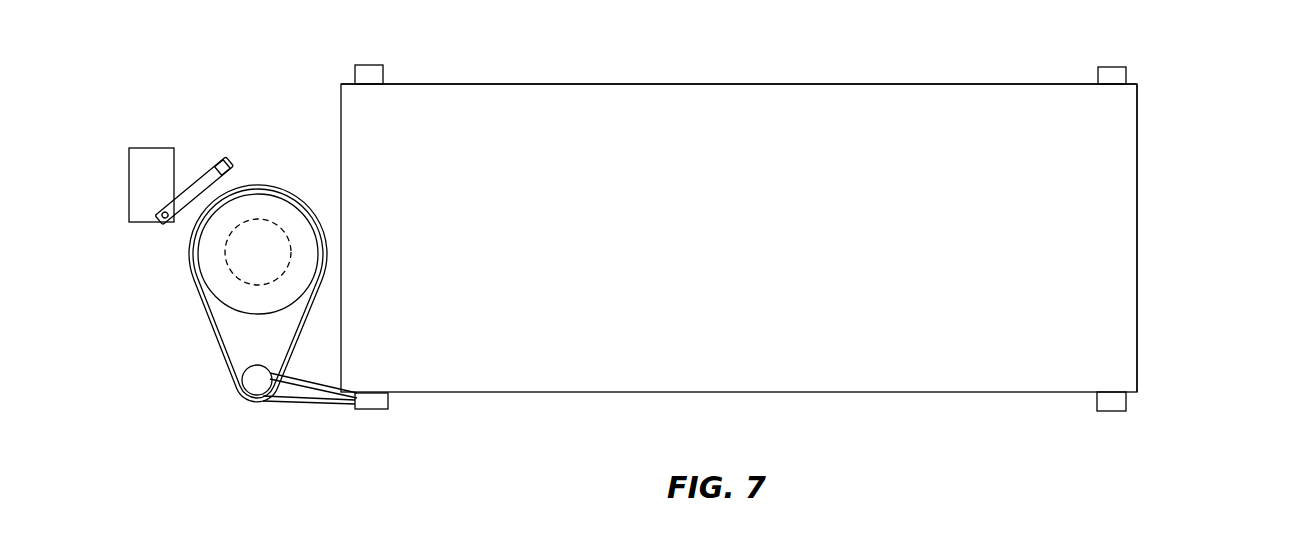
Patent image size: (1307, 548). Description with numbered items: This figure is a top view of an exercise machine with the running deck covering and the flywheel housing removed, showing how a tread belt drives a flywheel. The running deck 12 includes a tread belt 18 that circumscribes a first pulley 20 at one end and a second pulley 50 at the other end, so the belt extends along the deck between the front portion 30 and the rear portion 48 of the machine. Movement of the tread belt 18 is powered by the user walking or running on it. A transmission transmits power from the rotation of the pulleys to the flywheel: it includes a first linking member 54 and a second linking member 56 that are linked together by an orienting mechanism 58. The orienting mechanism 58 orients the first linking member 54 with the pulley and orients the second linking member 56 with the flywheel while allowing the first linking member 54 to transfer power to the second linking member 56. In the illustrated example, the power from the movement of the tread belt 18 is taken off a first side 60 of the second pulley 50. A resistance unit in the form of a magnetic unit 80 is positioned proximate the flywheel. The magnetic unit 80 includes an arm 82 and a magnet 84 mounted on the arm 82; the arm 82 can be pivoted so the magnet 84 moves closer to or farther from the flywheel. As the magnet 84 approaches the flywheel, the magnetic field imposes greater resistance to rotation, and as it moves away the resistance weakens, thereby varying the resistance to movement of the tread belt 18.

The running deck 12 is at (830, 72).
The tread belt 18 is at (585, 100).
The first pulley 20 is at (355, 70).
The front portion 30 is at (184, 154).
The rear portion 48 is at (1178, 217).
The second pulley 50 is at (1125, 68).
The first linking member 54 is at (322, 404).
The second linking member 56 is at (205, 325).
The orienting mechanism 58 is at (255, 386).
The first side 60 is at (360, 45).
The magnetic unit 80 is at (143, 172).
The arm 82 is at (232, 160).
The magnet 84 is at (214, 160).